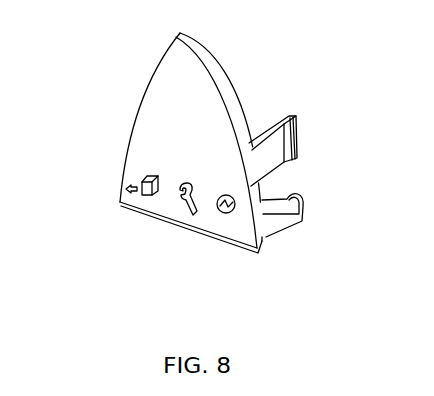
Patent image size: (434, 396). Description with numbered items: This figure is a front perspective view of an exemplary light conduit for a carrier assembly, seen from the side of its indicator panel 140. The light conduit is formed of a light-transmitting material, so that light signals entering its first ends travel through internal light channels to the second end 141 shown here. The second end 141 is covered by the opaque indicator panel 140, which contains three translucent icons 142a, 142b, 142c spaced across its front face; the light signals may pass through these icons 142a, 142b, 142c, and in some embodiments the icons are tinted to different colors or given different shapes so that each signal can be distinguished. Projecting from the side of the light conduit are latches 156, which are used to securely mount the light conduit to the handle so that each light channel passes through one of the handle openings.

The indicator panel 140 is at (167, 110).
The second end 141 is at (109, 181).
The translucent icon 142a is at (143, 202).
The translucent icon 142b is at (180, 234).
The translucent icon 142c is at (232, 227).
The latches 156 is at (284, 116).